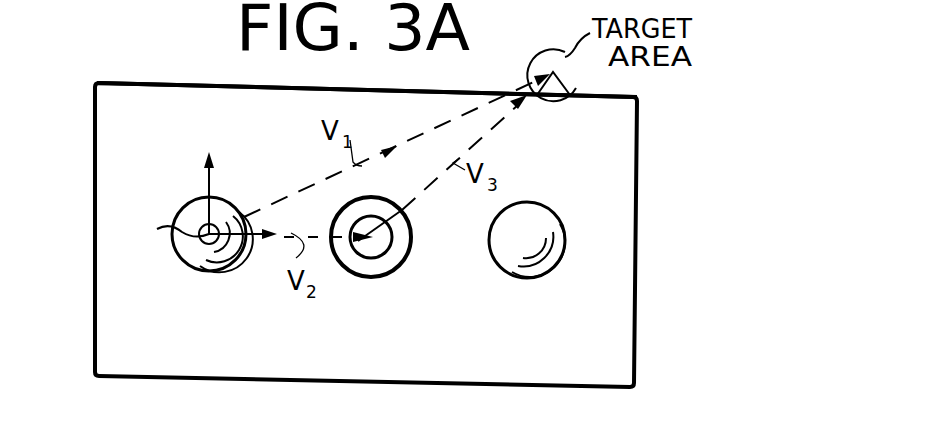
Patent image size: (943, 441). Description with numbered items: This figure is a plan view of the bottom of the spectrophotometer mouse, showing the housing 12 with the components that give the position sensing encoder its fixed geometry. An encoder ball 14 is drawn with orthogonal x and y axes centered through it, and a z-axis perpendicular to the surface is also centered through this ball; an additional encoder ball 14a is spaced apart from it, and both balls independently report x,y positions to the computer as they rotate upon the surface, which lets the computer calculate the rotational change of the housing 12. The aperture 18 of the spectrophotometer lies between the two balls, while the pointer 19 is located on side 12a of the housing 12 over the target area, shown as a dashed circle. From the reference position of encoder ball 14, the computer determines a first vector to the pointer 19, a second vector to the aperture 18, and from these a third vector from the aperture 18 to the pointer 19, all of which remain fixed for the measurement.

The housing 12 is at (95, 312).
The side of housing 12a is at (192, 83).
The encoder ball 14 is at (222, 272).
The additional encoder ball 14a is at (497, 277).
The aperture 18 is at (358, 277).
The pointer 19 is at (557, 92).